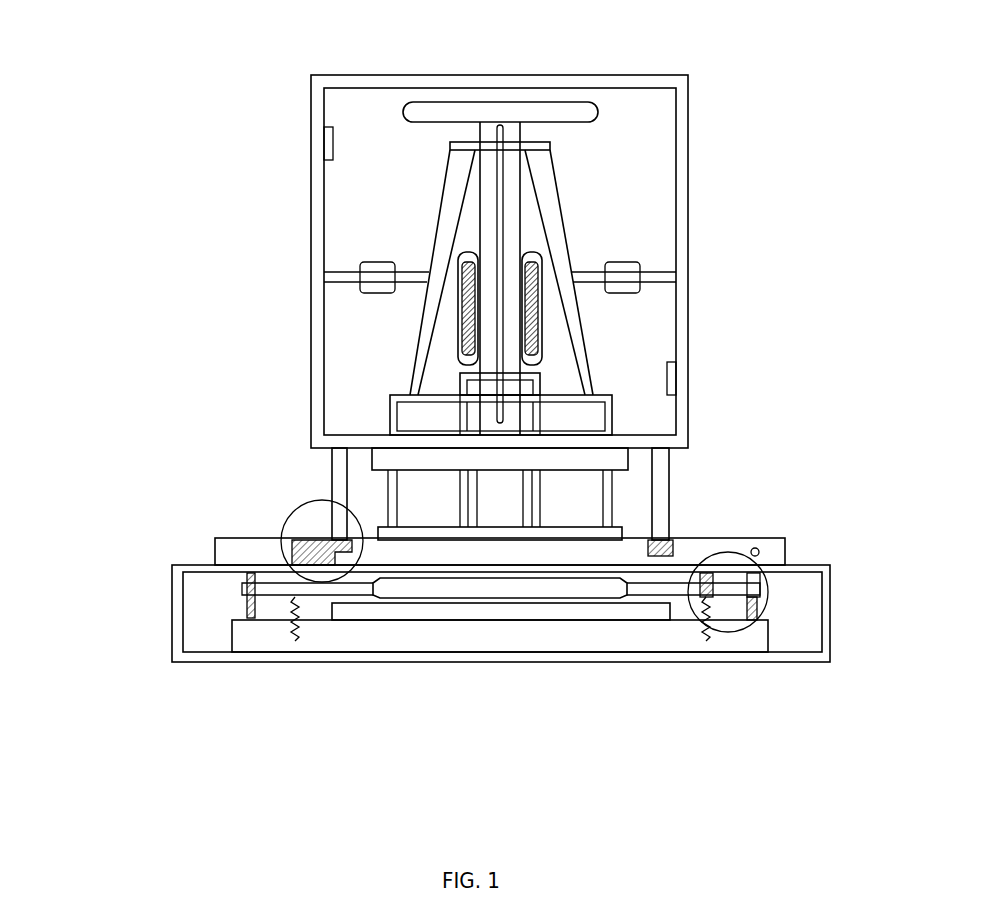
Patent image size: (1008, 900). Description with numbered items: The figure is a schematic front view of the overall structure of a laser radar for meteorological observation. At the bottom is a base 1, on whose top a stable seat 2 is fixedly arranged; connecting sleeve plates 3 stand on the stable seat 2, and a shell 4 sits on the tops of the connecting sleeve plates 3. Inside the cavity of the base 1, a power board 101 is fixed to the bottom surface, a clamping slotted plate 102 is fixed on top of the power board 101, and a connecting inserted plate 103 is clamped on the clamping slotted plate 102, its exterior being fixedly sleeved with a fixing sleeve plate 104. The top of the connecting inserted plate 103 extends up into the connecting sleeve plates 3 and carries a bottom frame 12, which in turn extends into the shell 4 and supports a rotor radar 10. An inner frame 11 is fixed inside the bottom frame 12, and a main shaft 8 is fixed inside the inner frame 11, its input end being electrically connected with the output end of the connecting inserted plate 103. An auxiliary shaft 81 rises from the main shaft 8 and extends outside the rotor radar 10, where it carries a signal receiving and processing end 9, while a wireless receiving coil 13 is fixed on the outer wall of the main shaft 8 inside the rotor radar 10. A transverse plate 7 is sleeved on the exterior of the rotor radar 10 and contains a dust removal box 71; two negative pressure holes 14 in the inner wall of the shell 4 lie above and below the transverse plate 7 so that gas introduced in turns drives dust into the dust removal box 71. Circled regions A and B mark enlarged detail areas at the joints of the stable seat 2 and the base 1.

The base 1 is at (172, 650).
The stable seat 2 is at (213, 550).
The connecting sleeve plates 3 is at (670, 478).
The shell 4 is at (312, 275).
The transverse plate 7 is at (672, 282).
The dust removal box 71 is at (637, 262).
The main shaft 8 is at (500, 495).
The signal receiving and processing end 9 is at (500, 100).
The rotor radar 10 is at (452, 142).
The inner frame 11 is at (540, 383).
The bottom frame 12 is at (612, 403).
The wireless receiving coil 13 is at (543, 258).
The negative pressure holes 14 is at (326, 141).
The auxiliary shaft 81 is at (518, 177).
The power board 101 is at (347, 638).
The clamping slotted plate 102 is at (450, 613).
The connecting inserted plate 103 is at (597, 600).
The fixing sleeve plate 104 is at (503, 590).
The detail A is at (740, 550).
The detail B is at (298, 505).